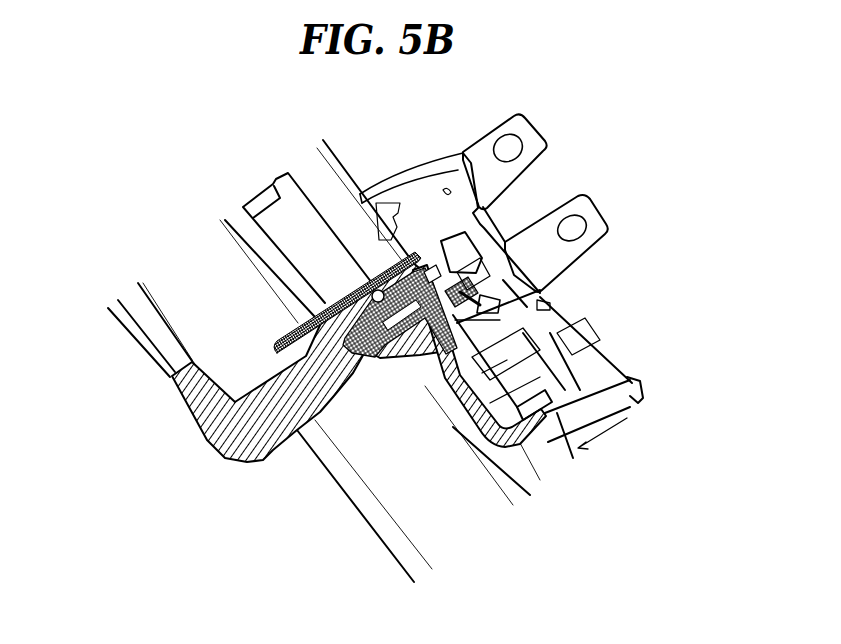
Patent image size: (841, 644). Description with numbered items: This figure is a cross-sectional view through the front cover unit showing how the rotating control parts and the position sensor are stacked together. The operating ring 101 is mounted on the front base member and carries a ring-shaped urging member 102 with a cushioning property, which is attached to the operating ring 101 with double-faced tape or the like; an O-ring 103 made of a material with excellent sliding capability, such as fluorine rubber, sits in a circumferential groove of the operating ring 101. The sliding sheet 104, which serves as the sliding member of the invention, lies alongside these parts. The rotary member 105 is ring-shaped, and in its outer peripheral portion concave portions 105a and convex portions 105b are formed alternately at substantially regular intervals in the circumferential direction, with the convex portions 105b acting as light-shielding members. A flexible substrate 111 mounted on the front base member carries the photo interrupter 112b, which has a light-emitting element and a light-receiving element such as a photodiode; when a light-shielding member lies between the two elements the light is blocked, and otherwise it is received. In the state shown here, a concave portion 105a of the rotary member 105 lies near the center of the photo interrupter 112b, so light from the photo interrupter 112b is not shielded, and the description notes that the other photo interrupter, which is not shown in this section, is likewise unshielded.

The operating ring 101 is at (258, 422).
The urging member 102 is at (347, 358).
The O-ring 103 is at (377, 290).
The sliding sheet 104 is at (431, 268).
The rotary member 105 is at (400, 262).
The concave portion 105a is at (437, 292).
The convex portion 105b is at (443, 297).
The flexible substrate 111 is at (470, 292).
The photo interrupter 112b is at (520, 323).